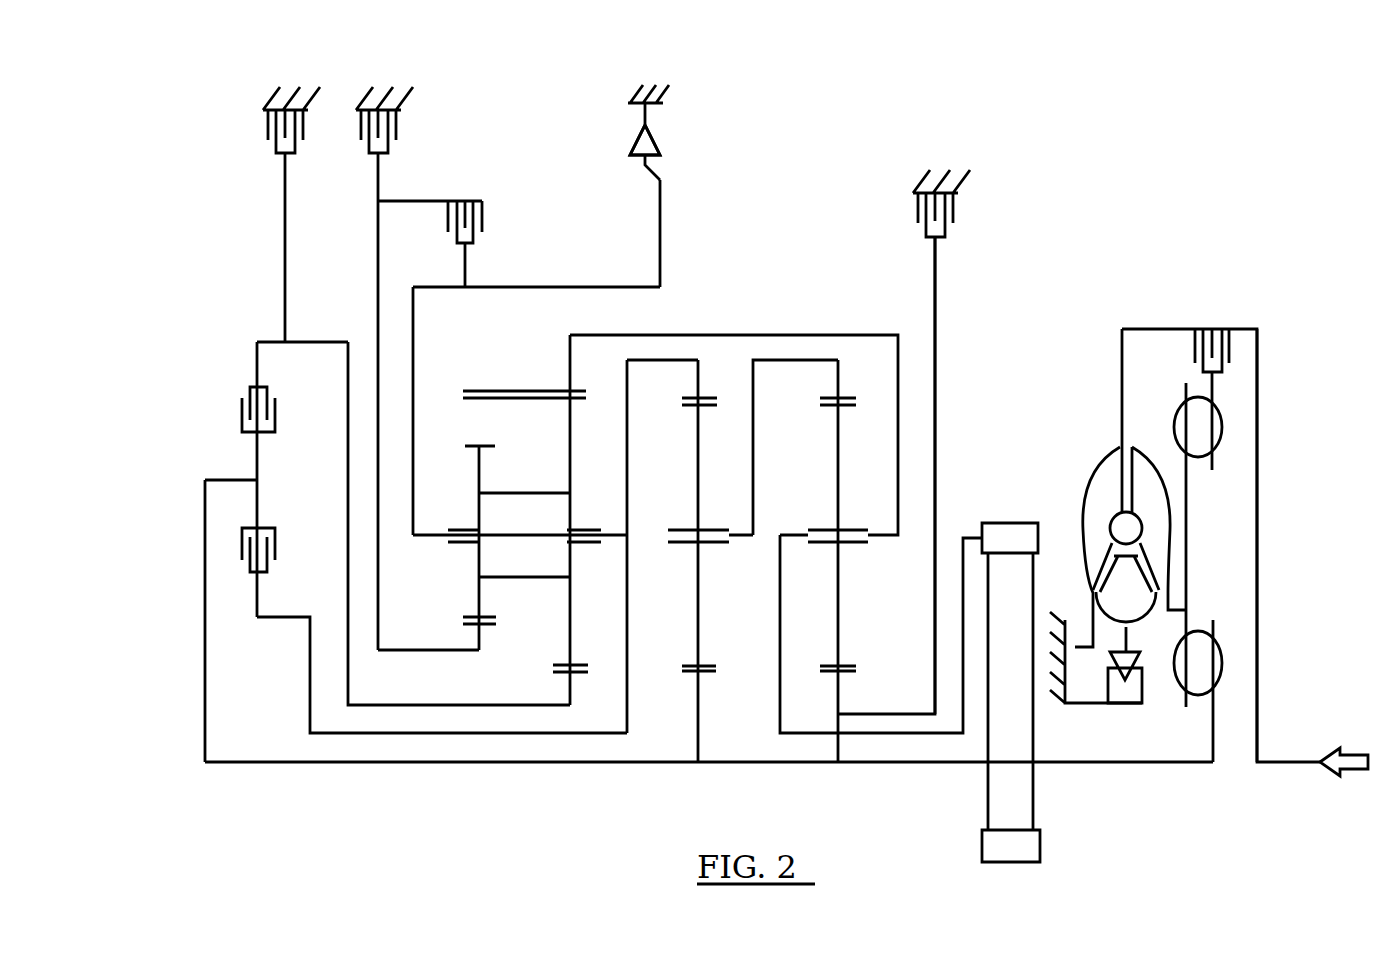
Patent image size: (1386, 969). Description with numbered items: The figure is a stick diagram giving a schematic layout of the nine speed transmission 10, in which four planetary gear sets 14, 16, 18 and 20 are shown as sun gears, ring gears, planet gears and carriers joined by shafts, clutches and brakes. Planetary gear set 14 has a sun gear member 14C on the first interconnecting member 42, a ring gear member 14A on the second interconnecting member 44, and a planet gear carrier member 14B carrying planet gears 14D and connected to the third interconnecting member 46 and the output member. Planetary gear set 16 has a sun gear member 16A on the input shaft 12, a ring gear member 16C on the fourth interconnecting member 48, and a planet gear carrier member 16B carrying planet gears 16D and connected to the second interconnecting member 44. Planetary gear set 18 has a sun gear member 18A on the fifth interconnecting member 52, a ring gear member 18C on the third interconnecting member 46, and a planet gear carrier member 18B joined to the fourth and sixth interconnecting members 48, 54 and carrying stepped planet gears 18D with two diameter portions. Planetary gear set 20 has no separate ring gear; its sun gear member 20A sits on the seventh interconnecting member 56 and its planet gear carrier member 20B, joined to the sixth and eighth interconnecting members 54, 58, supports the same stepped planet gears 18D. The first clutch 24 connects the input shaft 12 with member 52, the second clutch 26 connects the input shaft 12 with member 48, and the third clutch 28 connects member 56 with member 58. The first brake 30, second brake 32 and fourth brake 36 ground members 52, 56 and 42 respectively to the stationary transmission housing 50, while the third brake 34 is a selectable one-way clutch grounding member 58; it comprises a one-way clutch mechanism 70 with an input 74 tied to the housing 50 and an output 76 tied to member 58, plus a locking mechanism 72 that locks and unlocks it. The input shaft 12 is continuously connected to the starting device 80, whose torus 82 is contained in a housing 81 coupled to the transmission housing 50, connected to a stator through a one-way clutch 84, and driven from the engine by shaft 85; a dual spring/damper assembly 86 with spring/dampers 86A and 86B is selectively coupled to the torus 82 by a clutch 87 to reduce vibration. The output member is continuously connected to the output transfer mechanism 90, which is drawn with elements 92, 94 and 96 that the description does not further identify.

The nine speed transmission 10 is at (1222, 167).
The input shaft or member 12 is at (930, 764).
The planetary gear set 14 is at (859, 712).
The ring gear member 14A is at (845, 396).
The planet gear carrier member 14B is at (822, 546).
The sun gear member 14C is at (828, 675).
The planet gears 14D is at (838, 470).
The planetary gear set 16 is at (716, 712).
The sun gear member 16A is at (688, 675).
The planet gear carrier member 16B is at (690, 546).
The ring gear member 16C is at (705, 396).
The planet gears 16D is at (698, 470).
The planetary gear set 18 is at (553, 712).
The sun gear member 18A is at (580, 675).
The planet gear carrier member 18B is at (582, 545).
The ring gear member 18C is at (566, 390).
The stepped planet gears 18D is at (540, 492).
The planetary gear set 20 is at (473, 712).
The sun gear member 20A is at (490, 628).
The planet gear carrier member 20B is at (463, 526).
The first clutch 24 is at (242, 417).
The second clutch 26 is at (242, 545).
The third clutch 28 is at (484, 225).
The first brake 30 is at (268, 125).
The second brake 32 is at (396, 125).
The third brake or selectable one-way clutch 34 is at (622, 90).
The fourth brake 36 is at (958, 213).
The first shaft or interconnecting member 42 is at (938, 385).
The second shaft or interconnecting member 44 is at (796, 360).
The third shaft or interconnecting member 46 is at (675, 335).
The fourth shaft or interconnecting member 48 is at (630, 452).
The stationary element or transmission housing 50 is at (370, 96).
The fifth shaft or interconnecting member 52 is at (422, 707).
The sixth shaft or interconnecting member 54 is at (522, 538).
The seventh shaft or interconnecting member 56 is at (380, 590).
The eighth shaft or interconnecting member 58 is at (557, 286).
The one-way clutch mechanism 70 is at (662, 150).
The locking mechanism 72 is at (657, 183).
The input 74 is at (642, 120).
The output 76 is at (663, 202).
The starting device 80 is at (1248, 316).
The housing 81 is at (1060, 622).
The torus 82 is at (1097, 455).
The one-way clutch 84 is at (1143, 665).
The shaft or member 85 is at (1259, 390).
The dual spring/damper assembly 86 is at (1224, 733).
The spring/damper 86A is at (1223, 427).
The spring/damper 86B is at (1223, 663).
The clutch 87 is at (1203, 345).
The output transfer mechanism 90 is at (1051, 651).
The motor end member 92 is at (1004, 522).
The motor end member 94 is at (1042, 845).
The motor shaft / connecting member 96 is at (1037, 725).